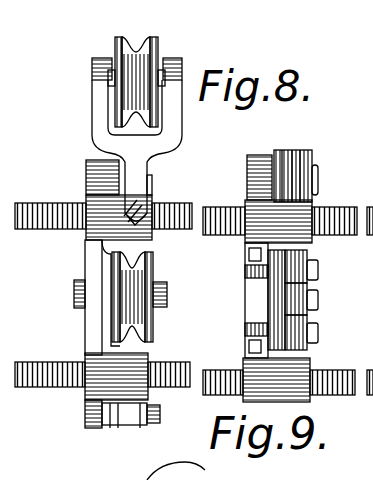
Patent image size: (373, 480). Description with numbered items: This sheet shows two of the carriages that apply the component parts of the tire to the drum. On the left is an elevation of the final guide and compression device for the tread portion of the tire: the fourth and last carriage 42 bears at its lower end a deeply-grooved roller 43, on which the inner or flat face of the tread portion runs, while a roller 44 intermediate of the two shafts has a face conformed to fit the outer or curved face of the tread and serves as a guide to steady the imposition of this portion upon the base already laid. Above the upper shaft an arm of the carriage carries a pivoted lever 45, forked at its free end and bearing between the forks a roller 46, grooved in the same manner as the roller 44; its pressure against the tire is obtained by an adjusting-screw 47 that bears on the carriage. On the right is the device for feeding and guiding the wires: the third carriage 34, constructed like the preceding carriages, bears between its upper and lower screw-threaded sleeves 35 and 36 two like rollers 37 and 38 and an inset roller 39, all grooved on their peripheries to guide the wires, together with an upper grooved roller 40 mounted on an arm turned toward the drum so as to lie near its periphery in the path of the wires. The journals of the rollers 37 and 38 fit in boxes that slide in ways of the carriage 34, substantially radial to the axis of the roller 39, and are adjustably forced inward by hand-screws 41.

In FIG. 9, the third carriage 34 is at (242, 300).
In FIG. 9, the upper sleeve 35 is at (247, 187).
In FIG. 9, the lower sleeve 36 is at (243, 358).
In FIG. 9, the roller 37 is at (312, 253).
In FIG. 9, the roller 38 is at (312, 349).
In FIG. 9, the inset roller 39 is at (318, 298).
In FIG. 9, the upper grooved roller 40 is at (313, 157).
In FIG. 9, the hand-screws 41 is at (245, 328).
In FIG. 8, the fourth carriage 42 is at (86, 257).
In FIG. 8, the deeply-grooved roller 43 is at (135, 426).
In FIG. 8, the roller 44 is at (153, 340).
In FIG. 8, the lever 45 is at (183, 148).
In FIG. 8, the roller 46 is at (136, 68).
In FIG. 8, the adjusting-screw 47 is at (118, 222).